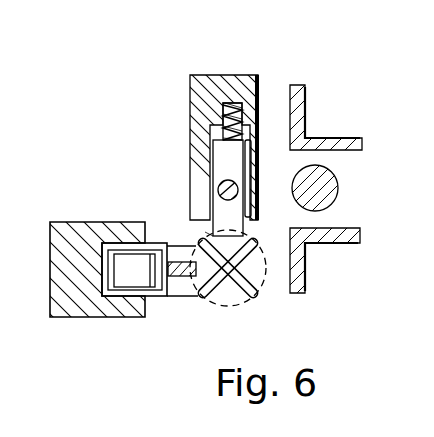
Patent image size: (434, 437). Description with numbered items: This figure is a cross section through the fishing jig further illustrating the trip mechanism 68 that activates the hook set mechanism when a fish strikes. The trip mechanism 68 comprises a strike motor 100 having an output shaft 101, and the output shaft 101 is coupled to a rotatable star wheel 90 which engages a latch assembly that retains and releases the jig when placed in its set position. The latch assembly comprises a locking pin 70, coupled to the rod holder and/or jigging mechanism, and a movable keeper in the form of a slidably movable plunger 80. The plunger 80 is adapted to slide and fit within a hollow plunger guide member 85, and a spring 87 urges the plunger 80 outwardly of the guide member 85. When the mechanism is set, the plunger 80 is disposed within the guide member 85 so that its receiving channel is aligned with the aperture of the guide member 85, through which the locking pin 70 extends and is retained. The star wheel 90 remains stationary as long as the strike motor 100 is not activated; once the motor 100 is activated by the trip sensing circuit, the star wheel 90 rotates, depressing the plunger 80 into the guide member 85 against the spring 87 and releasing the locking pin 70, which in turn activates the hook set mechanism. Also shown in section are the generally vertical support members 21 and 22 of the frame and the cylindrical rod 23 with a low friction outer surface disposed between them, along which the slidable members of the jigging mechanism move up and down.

The trip mechanism 68 is at (88, 116).
The plunger guide member 85 is at (238, 82).
The spring 87 is at (222, 130).
The locking pin 70 is at (224, 188).
The plunger 80 is at (208, 233).
The star wheel 90 is at (258, 299).
The output shaft 101 is at (183, 278).
The strike motor 100 is at (133, 268).
The vertical support member 22 is at (303, 125).
The cylindrical rod 23 is at (327, 187).
The vertical support member 21 is at (343, 227).